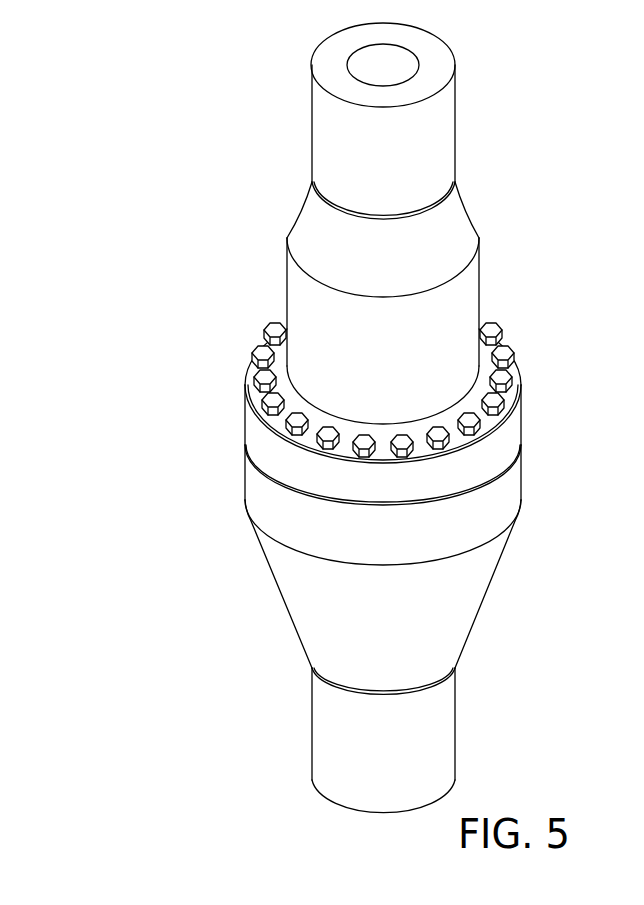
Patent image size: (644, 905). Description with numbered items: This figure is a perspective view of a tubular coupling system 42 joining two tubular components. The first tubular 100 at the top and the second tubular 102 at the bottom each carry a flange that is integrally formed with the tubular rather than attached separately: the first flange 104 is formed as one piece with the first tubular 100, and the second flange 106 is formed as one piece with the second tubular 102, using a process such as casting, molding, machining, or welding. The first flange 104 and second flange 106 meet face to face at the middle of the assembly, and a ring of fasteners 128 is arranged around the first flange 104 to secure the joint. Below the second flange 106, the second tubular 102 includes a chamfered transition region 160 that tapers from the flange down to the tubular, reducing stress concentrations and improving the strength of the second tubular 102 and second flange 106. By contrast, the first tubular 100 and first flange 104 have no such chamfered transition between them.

The tubular coupling system 42 is at (202, 428).
The first tubular 100 is at (438, 132).
The second tubular 102 is at (435, 740).
The first flange 104 is at (508, 435).
The second flange 106 is at (505, 493).
The bolts 128 is at (515, 350).
The chamfered transition region 160 is at (455, 610).